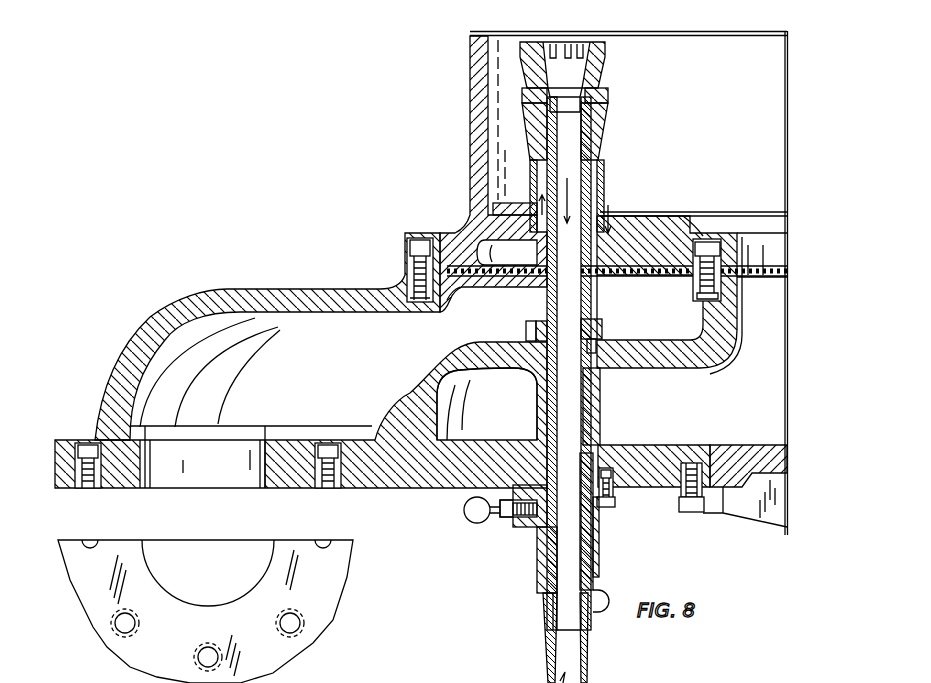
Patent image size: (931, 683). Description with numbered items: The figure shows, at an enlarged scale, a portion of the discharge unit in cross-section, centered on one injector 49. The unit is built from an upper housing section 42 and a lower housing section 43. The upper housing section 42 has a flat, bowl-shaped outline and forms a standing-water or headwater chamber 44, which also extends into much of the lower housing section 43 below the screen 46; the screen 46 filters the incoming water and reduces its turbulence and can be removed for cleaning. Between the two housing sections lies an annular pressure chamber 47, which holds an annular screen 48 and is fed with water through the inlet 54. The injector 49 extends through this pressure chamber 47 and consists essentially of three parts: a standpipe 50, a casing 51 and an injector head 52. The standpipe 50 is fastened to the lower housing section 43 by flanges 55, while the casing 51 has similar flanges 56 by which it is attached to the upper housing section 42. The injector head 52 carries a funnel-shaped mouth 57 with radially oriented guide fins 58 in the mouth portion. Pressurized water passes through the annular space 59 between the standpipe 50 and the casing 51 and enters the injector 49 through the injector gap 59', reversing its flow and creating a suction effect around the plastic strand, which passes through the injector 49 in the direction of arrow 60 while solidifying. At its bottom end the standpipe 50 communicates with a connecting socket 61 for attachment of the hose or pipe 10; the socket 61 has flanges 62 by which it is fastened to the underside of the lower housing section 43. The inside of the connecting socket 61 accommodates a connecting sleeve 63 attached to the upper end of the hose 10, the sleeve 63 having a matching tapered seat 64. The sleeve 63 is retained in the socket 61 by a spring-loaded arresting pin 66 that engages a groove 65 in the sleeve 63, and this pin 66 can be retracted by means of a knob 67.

The hose or pipe 10 is at (588, 655).
The upper housing section 42 is at (471, 71).
The lower housing section 43 is at (438, 373).
The headwater chamber 44 is at (727, 142).
The screen 46 is at (775, 283).
The annular pressure chamber 47 is at (676, 328).
The annular screen 48 is at (489, 268).
The injector 49 is at (603, 163).
The standpipe 50 is at (601, 399).
The casing 51 is at (598, 142).
The injector head 52 is at (606, 62).
The inlet 54 is at (173, 357).
The flanges 55 is at (537, 323).
The flanges 56 is at (511, 120).
The funnel-shaped mouth 57 is at (543, 72).
The guide fins 58 is at (572, 43).
The annular space 59 is at (478, 204).
The injector gap 59' is at (585, 100).
The arrow 60 is at (594, 268).
The connecting socket 61 is at (599, 548).
The flanges 62 is at (512, 487).
The connecting sleeve 63 is at (540, 553).
The tapered seat 64 is at (518, 447).
The groove 65 is at (603, 510).
The arresting pin 66 is at (500, 516).
The knob 67 is at (463, 515).